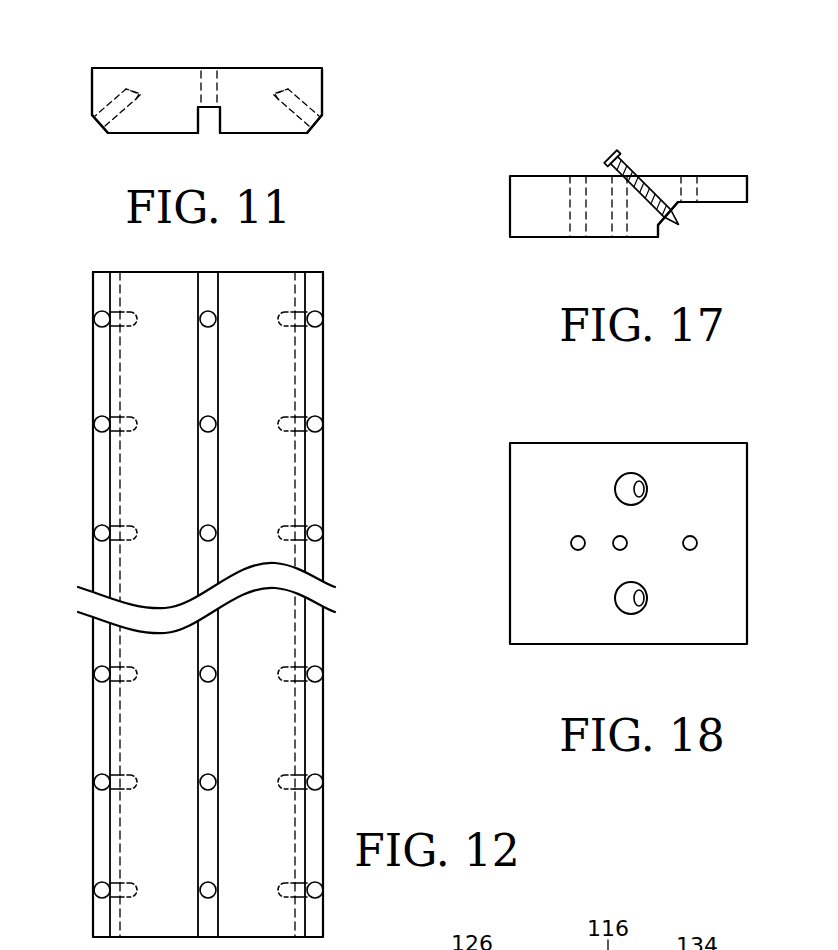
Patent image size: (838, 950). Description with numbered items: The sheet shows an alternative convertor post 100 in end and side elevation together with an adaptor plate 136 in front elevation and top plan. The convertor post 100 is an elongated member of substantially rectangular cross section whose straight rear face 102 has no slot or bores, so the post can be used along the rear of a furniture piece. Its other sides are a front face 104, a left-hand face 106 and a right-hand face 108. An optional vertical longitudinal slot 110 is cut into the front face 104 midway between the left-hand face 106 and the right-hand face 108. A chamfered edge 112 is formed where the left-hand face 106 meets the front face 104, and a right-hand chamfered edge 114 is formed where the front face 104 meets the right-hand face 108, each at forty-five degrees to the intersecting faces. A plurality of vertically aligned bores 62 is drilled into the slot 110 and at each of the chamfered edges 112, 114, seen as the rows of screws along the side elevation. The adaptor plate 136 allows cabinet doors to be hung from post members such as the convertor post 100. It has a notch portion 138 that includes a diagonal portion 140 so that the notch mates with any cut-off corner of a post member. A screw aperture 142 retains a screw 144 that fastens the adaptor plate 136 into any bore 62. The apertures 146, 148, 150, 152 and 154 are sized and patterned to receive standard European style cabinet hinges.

In FIG. 11, the bores 62 is at (113, 97).
In FIG. 12, the bores 62 is at (322, 423).
In FIG. 11, the alternative convertor post 100 is at (92, 70).
In FIG. 12, the alternative convertor post 100 is at (93, 300).
In FIG. 11, the rear face 102 is at (133, 68).
In FIG. 11, the front face 104 is at (267, 135).
In FIG. 11, the left-hand face 106 is at (92, 108).
In FIG. 12, the left-hand face 106 is at (100, 370).
In FIG. 11, the right-hand face 108 is at (323, 80).
In FIG. 12, the right-hand face 108 is at (325, 370).
In FIG. 11, the vertical longitudinal slot 110 is at (213, 120).
In FIG. 12, the vertical longitudinal slot 110 is at (208, 283).
In FIG. 11, the chamfered edge 112 is at (108, 133).
In FIG. 12, the chamfered edge 112 is at (103, 272).
In FIG. 11, the right-hand chamfered edge 114 is at (317, 125).
In FIG. 12, the right-hand chamfered edge 114 is at (312, 270).
In FIG. 17, the adaptor plate 136 is at (535, 175).
In FIG. 18, the adaptor plate 136 is at (717, 442).
In FIG. 17, the notch portion 138 is at (730, 202).
In FIG. 17, the diagonal portion 140 is at (670, 223).
In FIG. 17, the screw aperture 142 is at (657, 187).
In FIG. 17, the screw 144 is at (613, 155).
In FIG. 17, the aperture 146 is at (698, 175).
In FIG. 18, the aperture 146 is at (698, 542).
In FIG. 17, the aperture 148 is at (676, 232).
In FIG. 18, the aperture 148 is at (645, 602).
In FIG. 18, the aperture 150 is at (613, 547).
In FIG. 17, the aperture 152 is at (572, 238).
In FIG. 18, the aperture 152 is at (572, 543).
In FIG. 17, the aperture 154 is at (615, 238).
In FIG. 18, the aperture 154 is at (630, 472).